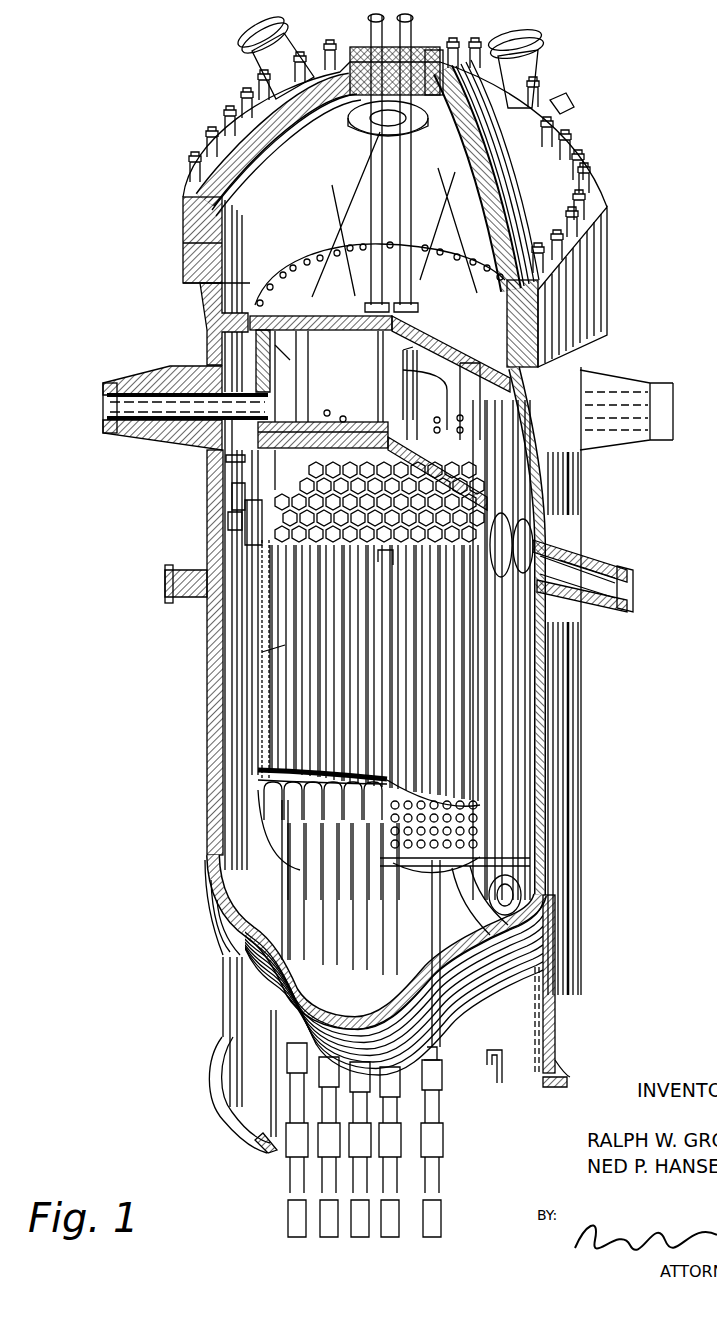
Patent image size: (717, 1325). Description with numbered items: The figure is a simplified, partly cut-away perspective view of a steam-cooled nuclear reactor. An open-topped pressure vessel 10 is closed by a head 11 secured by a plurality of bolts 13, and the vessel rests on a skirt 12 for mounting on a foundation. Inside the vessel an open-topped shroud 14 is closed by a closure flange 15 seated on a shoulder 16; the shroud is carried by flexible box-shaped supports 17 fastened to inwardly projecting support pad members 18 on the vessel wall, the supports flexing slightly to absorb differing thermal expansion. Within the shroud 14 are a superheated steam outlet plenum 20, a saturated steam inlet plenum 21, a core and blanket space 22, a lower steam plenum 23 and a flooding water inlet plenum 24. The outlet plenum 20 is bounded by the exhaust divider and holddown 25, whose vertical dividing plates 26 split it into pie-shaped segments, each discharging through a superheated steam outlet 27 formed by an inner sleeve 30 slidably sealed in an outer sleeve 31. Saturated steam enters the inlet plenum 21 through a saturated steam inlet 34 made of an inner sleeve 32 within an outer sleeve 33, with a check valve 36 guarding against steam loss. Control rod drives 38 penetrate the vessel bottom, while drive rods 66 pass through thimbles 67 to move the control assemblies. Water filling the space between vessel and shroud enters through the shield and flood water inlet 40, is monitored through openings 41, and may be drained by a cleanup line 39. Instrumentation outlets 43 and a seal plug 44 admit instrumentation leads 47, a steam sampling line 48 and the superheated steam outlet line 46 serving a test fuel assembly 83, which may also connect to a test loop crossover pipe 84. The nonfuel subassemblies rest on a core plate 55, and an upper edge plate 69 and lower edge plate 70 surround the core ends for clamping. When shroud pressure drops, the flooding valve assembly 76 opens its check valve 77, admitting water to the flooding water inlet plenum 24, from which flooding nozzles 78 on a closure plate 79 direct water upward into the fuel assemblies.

The pressure vessel 10 is at (580, 773).
The head 11 is at (595, 228).
The skirt 12 is at (556, 990).
The bolts 13 is at (577, 128).
The shroud 14 is at (255, 712).
The closure flange 15 is at (307, 260).
The shoulder 16 is at (250, 337).
The flexible box-shaped supports 17 is at (208, 490).
The support pad members 18 is at (217, 520).
The superheated steam outlet plenum 20 is at (338, 380).
The saturated steam inlet plenum 21 is at (277, 482).
The core and blanket space 22 is at (262, 652).
The lower steam plenum 23 is at (277, 810).
The flooding water inlet plenum 24 is at (487, 860).
The exhaust divider and holddown 25 is at (258, 362).
The vertical dividing plates 26 is at (380, 418).
The superheated steam outlet 27 is at (140, 378).
The inner sleeve 30 is at (108, 402).
The outer sleeve 31 is at (103, 418).
The inner sleeve 32 is at (603, 553).
The outer sleeve 33 is at (627, 602).
The saturated steam inlet 34 is at (630, 568).
The check valve 36 is at (572, 537).
The control rod drives 38 is at (443, 1170).
The cleanup line 39 is at (502, 1078).
The shield and flood water inlet 40 is at (217, 458).
The openings 41 is at (163, 592).
The instrumentation outlets 43 is at (290, 38).
The seal plug 44 is at (425, 48).
The superheated steam outlet line 46 is at (380, 562).
The instrumentation leads 47 is at (352, 198).
The steam sampling line 48 is at (310, 348).
The core plate 55 is at (258, 792).
The drive rods 66 is at (210, 872).
The thimbles 67 is at (443, 1072).
The upper edge plate 69 is at (222, 555).
The lower edge plate 70 is at (262, 750).
The flooding valve assembly 76 is at (470, 921).
The check valve 77 is at (523, 887).
The flooding nozzles 78 is at (295, 850).
The closure plate 79 is at (300, 805).
The test fuel assembly 83 is at (410, 693).
The test loop crossover pipe 84 is at (445, 375).